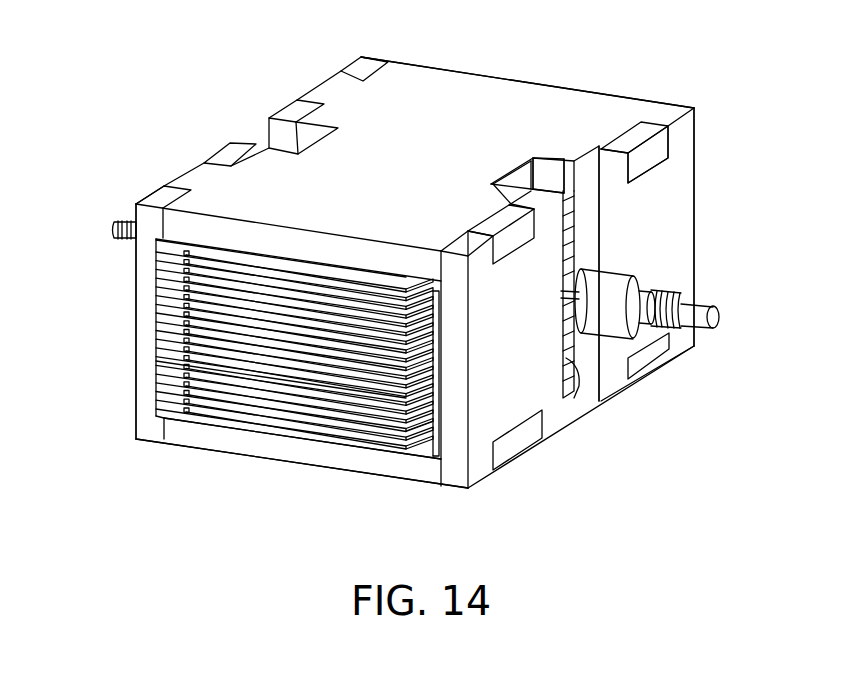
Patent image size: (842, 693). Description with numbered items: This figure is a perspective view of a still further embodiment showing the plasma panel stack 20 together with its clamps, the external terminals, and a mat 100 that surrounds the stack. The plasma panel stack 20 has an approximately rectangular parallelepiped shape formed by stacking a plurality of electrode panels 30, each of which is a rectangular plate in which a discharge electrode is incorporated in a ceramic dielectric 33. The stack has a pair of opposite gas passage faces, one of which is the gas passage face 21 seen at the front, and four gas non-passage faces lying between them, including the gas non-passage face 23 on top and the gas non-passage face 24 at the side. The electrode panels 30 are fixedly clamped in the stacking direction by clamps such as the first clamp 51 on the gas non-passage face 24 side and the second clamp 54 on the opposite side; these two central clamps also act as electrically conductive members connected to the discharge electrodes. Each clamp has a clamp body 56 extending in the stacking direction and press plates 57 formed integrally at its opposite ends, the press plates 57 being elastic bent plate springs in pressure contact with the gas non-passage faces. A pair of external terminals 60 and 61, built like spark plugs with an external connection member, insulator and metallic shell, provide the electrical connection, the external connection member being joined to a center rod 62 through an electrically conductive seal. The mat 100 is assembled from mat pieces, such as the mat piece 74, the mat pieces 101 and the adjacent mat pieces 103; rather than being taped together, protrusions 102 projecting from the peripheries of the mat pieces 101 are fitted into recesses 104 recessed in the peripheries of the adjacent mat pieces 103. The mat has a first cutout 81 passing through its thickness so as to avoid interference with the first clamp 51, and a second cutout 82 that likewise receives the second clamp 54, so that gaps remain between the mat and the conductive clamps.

The mat 100 is at (433, 63).
The mat pieces 101 is at (488, 88).
The plasma panel stack 20 is at (155, 343).
The gas passage face 21 is at (280, 435).
The gas non-passage face 23 is at (353, 262).
The gas non-passage face 24 is at (437, 373).
The electrode panels 30 is at (153, 367).
The dielectric 33 is at (420, 433).
The first clamp 51 is at (573, 227).
The second clamp 54 is at (290, 152).
The clamp body 56 is at (565, 358).
The press plates 57 is at (563, 183).
The external terminal 60 is at (718, 312).
The external terminal 61 is at (112, 225).
The center rod 62 is at (563, 298).
The mat piece 74 is at (325, 457).
The first cutout 81 is at (545, 167).
The second cutout 82 is at (317, 130).
The protrusions 102 is at (313, 95).
The mat pieces 103 is at (353, 67).
The recesses 104 is at (668, 142).